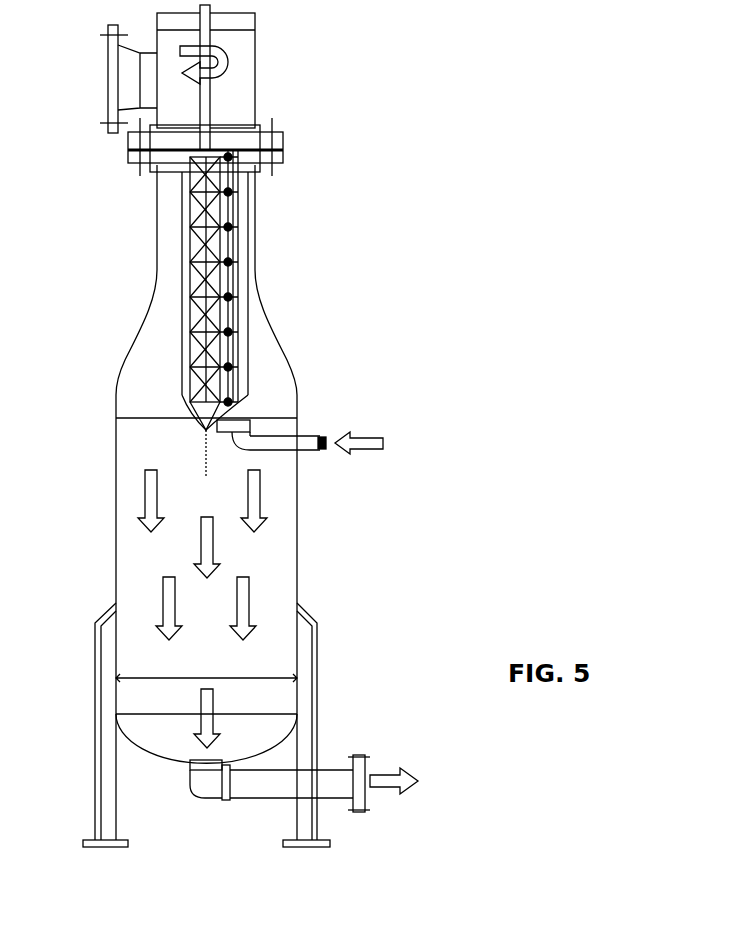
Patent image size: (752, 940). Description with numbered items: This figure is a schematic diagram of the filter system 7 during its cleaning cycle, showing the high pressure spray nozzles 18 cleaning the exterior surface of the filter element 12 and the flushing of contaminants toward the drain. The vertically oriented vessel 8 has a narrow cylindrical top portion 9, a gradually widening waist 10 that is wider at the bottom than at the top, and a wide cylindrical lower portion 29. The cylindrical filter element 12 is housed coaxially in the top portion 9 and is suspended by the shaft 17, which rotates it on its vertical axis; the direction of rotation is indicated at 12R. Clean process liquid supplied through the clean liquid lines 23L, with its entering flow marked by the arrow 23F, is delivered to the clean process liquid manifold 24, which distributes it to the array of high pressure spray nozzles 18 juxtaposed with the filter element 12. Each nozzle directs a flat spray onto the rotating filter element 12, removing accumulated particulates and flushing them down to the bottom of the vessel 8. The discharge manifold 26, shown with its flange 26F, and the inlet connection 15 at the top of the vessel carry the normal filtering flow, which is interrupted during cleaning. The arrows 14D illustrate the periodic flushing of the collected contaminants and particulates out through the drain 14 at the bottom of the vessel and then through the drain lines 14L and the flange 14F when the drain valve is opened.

The filter system 7 is at (437, 752).
The vessel 8 is at (447, 535).
The cylindrical top portion 9 is at (297, 218).
The waist 10 is at (382, 347).
The filter element 12 is at (183, 280).
The rotation direction 12R is at (230, 69).
The drain 14 is at (204, 757).
The arrows 14D is at (208, 545).
The flange 14F is at (360, 813).
The drain lines 14L is at (262, 796).
The inlet nozzle 15 is at (108, 109).
The shaft 17 is at (205, 102).
The high pressure spray nozzles 18 is at (220, 160).
The liquid feed flow 23F is at (388, 456).
The clean liquid lines 23L is at (307, 432).
The clean process liquid manifold 24 is at (238, 338).
The discharge manifold 26 is at (245, 37).
The mounting flange 26F is at (335, 148).
The lower portion 29 is at (382, 583).